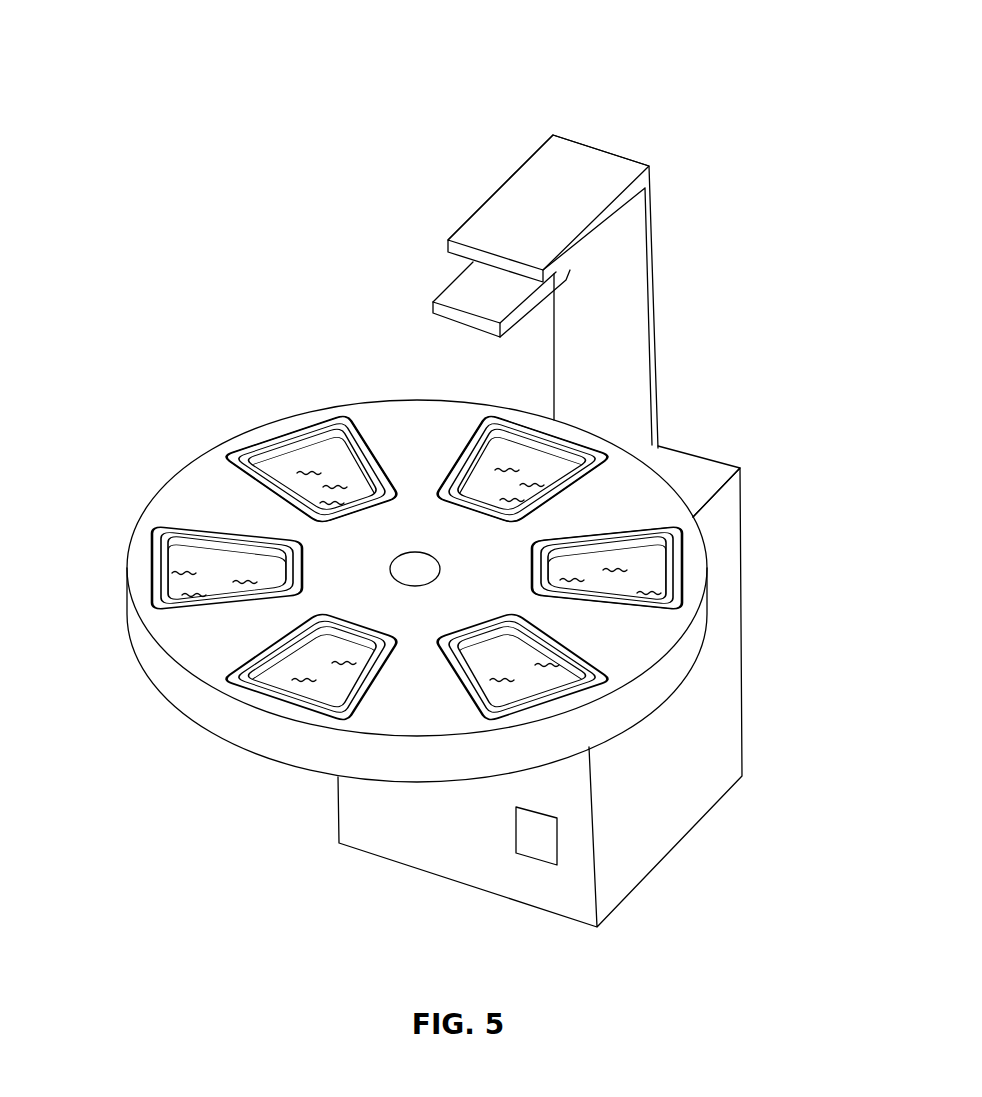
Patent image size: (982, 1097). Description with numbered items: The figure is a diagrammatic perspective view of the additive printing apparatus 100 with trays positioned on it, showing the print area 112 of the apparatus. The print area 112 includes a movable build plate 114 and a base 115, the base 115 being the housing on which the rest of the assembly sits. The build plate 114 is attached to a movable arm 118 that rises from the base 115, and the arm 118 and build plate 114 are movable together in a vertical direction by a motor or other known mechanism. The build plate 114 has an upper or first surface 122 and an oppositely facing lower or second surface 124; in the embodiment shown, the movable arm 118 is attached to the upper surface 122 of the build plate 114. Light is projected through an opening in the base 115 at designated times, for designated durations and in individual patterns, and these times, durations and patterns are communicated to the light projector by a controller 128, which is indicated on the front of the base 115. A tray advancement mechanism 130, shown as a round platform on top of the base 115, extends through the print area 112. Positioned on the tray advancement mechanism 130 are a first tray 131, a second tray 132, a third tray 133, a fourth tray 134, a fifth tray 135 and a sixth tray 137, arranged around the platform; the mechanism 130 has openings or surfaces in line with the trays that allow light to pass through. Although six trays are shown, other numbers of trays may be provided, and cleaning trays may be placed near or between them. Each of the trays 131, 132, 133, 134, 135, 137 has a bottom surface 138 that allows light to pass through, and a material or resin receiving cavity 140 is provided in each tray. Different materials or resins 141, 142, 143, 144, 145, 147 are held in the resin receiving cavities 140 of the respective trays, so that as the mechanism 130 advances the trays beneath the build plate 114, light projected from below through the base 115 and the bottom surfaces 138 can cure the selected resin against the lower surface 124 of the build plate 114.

The printing apparatus 100 is at (716, 104).
The print area 112 is at (435, 606).
The movable build plate 114 is at (492, 285).
The base 115 is at (586, 681).
The movable arm 118 is at (541, 291).
The upper or first surface 122 is at (451, 280).
The lower or second surface 124 is at (455, 340).
The controller 128 is at (538, 850).
The tray advancement mechanism 130 is at (675, 508).
The first tray 131 is at (719, 470).
The second tray 132 is at (683, 554).
The third tray 133 is at (586, 753).
The fourth tray 134 is at (282, 708).
The fifth tray 135 is at (168, 590).
The sixth tray 137 is at (298, 436).
The bottom surfaces 138 is at (548, 470).
The material or resin receiving cavities 140 is at (328, 445).
The material or resin 141 is at (583, 458).
The material or resin 142 is at (663, 533).
The material or resin 143 is at (598, 648).
The material or resin 144 is at (275, 687).
The material or resin 145 is at (150, 563).
The material or resin 147 is at (243, 452).